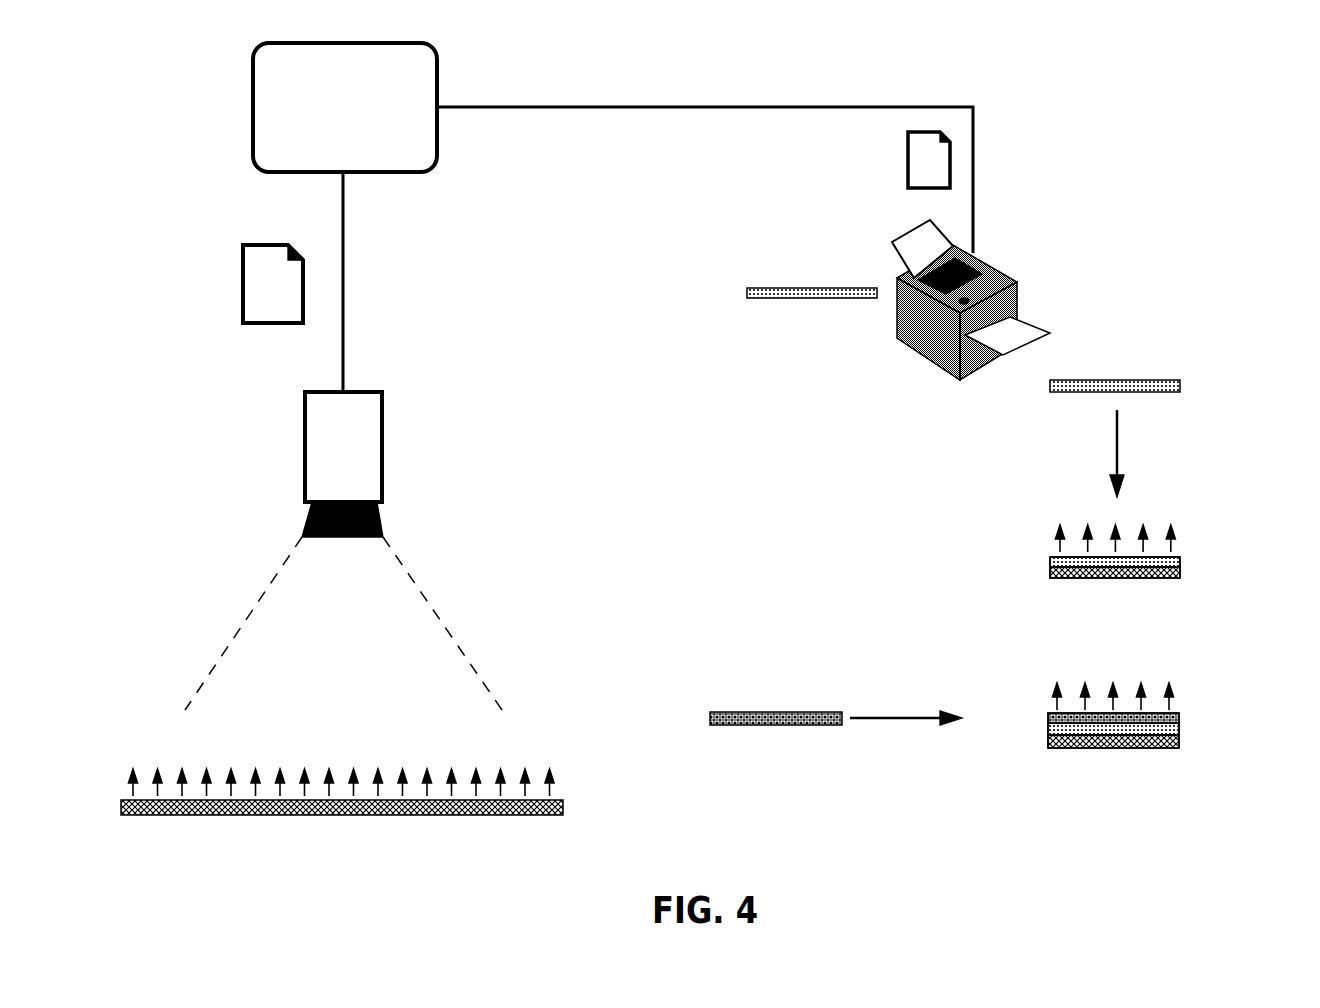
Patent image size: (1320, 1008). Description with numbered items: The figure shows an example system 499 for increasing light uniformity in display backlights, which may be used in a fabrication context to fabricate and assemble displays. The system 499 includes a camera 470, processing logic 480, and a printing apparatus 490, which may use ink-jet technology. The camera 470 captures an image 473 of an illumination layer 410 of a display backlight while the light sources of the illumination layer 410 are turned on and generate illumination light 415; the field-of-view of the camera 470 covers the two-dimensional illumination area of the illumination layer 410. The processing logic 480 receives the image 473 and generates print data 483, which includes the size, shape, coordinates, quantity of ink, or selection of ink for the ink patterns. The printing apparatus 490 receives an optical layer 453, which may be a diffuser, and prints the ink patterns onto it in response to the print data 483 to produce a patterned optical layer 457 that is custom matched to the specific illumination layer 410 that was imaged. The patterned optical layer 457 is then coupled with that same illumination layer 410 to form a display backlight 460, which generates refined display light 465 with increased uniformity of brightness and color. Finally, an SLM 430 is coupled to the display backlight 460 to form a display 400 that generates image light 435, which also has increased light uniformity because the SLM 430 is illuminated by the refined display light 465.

The system 499 is at (702, 427).
The processing logic 480 is at (345, 107).
The image 473 is at (243, 251).
The camera 470 is at (343, 551).
The illumination light 415 is at (579, 763).
The illumination layer 410 is at (565, 808).
The print data 483 is at (908, 152).
The printing apparatus 490 is at (992, 264).
The optical layer 453 is at (747, 292).
The patterned optical layer 457 is at (1180, 386).
The refined display light 465 is at (1220, 517).
The display backlight 460 is at (1046, 557).
The SLM 430 is at (710, 717).
The image light 435 is at (1190, 678).
The display 400 is at (1034, 713).